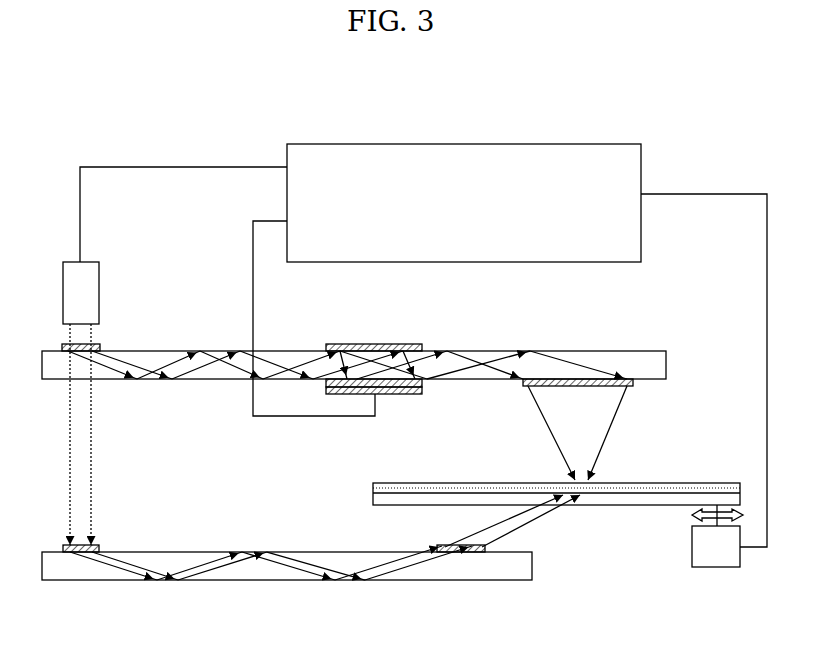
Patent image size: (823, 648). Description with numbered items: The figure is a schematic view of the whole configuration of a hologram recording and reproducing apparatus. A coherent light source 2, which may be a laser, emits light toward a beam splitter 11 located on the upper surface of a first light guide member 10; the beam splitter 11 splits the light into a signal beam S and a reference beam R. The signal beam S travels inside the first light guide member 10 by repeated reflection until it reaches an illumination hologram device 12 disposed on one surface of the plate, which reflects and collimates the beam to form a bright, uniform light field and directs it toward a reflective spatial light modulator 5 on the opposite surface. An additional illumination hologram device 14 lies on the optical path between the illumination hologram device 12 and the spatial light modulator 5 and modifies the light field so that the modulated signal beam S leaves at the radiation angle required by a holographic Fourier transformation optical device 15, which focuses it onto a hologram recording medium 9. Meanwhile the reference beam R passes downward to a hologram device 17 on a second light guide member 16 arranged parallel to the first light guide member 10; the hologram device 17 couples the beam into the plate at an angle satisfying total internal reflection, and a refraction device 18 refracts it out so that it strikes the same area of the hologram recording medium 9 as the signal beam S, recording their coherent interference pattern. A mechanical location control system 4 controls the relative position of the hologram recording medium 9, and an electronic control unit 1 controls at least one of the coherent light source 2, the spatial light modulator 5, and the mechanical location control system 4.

The electronic control unit 1 is at (473, 150).
The coherent light source 2 is at (99, 284).
The mechanical location control system 4 is at (722, 567).
The spatial light modulator 5 is at (423, 392).
The hologram recording medium 9 is at (710, 483).
The first light guide member 10 is at (53, 380).
The beam splitter 11 is at (100, 346).
The illumination hologram device 12 is at (378, 344).
The additional illumination hologram device 14 is at (423, 384).
The holographic Fourier transformation optical device 15 is at (635, 383).
The second light guide member 16 is at (55, 578).
The hologram device 17 is at (99, 549).
The refraction device 18 is at (437, 548).
The reference beam R is at (93, 446).
The signal beam S is at (268, 358).